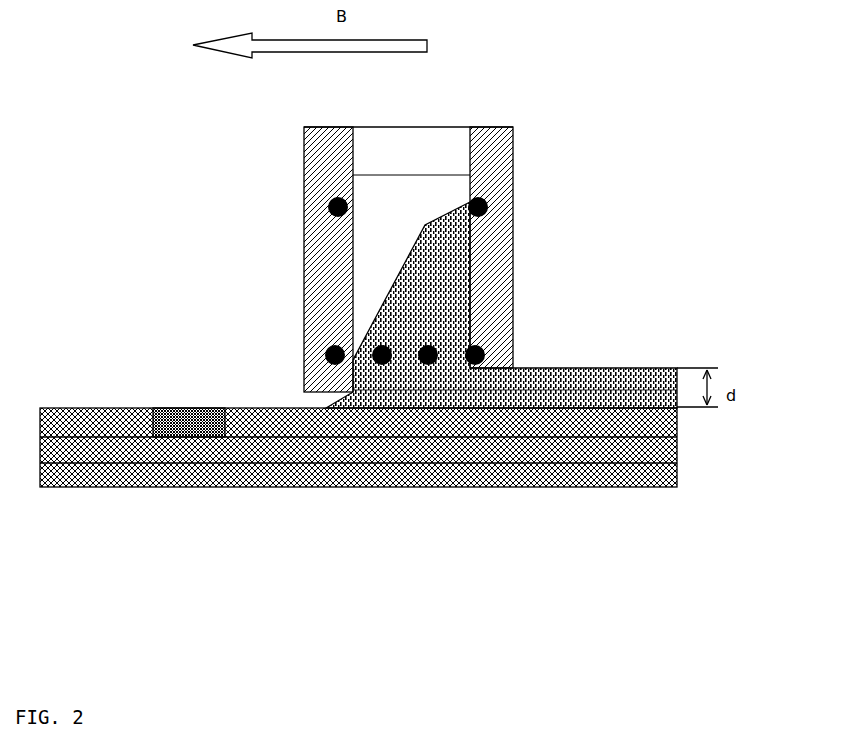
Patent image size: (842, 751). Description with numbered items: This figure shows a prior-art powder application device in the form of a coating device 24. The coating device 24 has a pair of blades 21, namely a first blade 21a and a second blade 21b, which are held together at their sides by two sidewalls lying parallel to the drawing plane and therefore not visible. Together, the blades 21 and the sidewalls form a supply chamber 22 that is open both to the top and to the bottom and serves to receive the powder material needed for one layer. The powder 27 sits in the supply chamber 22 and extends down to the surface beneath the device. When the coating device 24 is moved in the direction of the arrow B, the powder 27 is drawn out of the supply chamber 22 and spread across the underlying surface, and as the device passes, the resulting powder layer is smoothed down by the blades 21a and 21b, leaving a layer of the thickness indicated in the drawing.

The blades 21 is at (596, 18).
The first blade 21a is at (350, 127).
The second blade 21b is at (490, 127).
The supply chamber 22 is at (383, 253).
The coating device 24 is at (197, 110).
The powder 27 is at (425, 225).